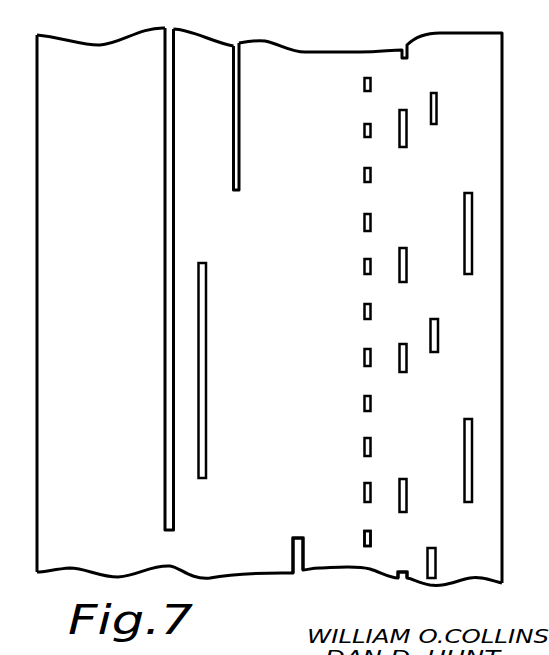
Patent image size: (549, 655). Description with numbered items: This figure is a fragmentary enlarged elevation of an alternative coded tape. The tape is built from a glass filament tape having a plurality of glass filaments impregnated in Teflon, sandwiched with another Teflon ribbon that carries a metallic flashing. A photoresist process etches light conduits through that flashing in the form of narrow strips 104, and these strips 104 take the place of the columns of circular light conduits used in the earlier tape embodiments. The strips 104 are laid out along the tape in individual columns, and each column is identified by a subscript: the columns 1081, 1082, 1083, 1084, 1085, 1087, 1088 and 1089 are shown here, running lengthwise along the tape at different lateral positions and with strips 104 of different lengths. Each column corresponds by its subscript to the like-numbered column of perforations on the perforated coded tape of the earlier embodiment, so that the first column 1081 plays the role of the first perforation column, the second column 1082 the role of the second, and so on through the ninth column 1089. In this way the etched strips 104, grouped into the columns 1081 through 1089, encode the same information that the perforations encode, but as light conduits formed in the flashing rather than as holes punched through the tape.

The narrow strips 104 is at (165, 233).
The column of strips 1081 is at (469, 503).
The column of strips 1082 is at (434, 548).
The column of strips 1083 is at (402, 570).
The column of strips 1084 is at (362, 534).
The column of strips 1085 is at (298, 537).
The column of strips 1087 is at (241, 192).
The column of strips 1088 is at (205, 482).
The column of strips 1089 is at (170, 535).